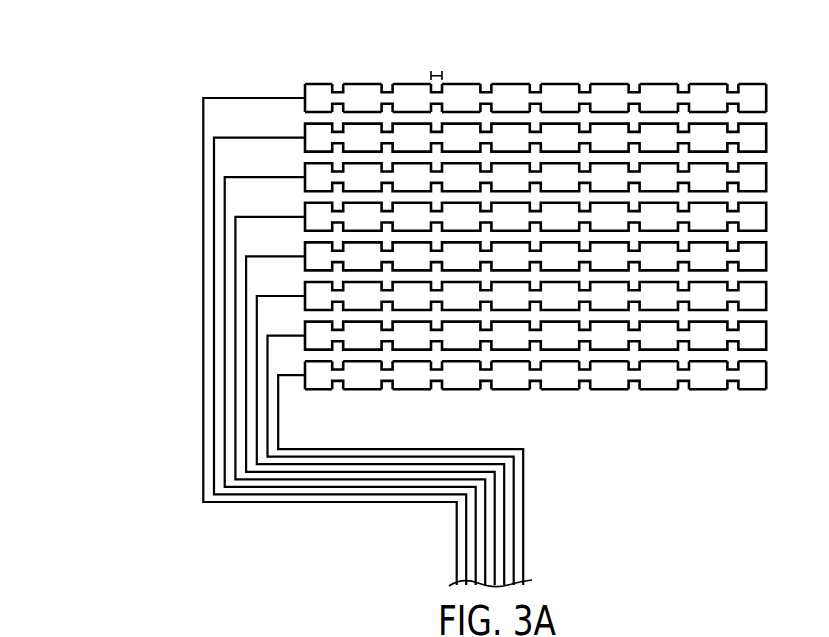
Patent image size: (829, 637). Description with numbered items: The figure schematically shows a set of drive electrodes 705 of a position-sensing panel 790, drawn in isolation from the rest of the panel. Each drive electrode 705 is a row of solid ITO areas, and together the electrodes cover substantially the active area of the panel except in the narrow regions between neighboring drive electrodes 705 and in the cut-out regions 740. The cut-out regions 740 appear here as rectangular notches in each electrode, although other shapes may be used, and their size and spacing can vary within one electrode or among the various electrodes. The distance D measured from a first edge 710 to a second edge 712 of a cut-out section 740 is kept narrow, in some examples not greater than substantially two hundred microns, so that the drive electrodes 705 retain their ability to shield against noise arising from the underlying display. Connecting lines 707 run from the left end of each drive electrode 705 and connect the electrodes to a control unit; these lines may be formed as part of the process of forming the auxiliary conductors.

The position-sensing panel 790 is at (164, 268).
The drive electrode 705 is at (477, 109).
The connecting line 707 is at (290, 98).
The cut-out region 740 is at (337, 72).
The first edge 710 is at (481, 84).
The second edge 712 is at (490, 84).
The edge-to-edge distance D is at (437, 70).